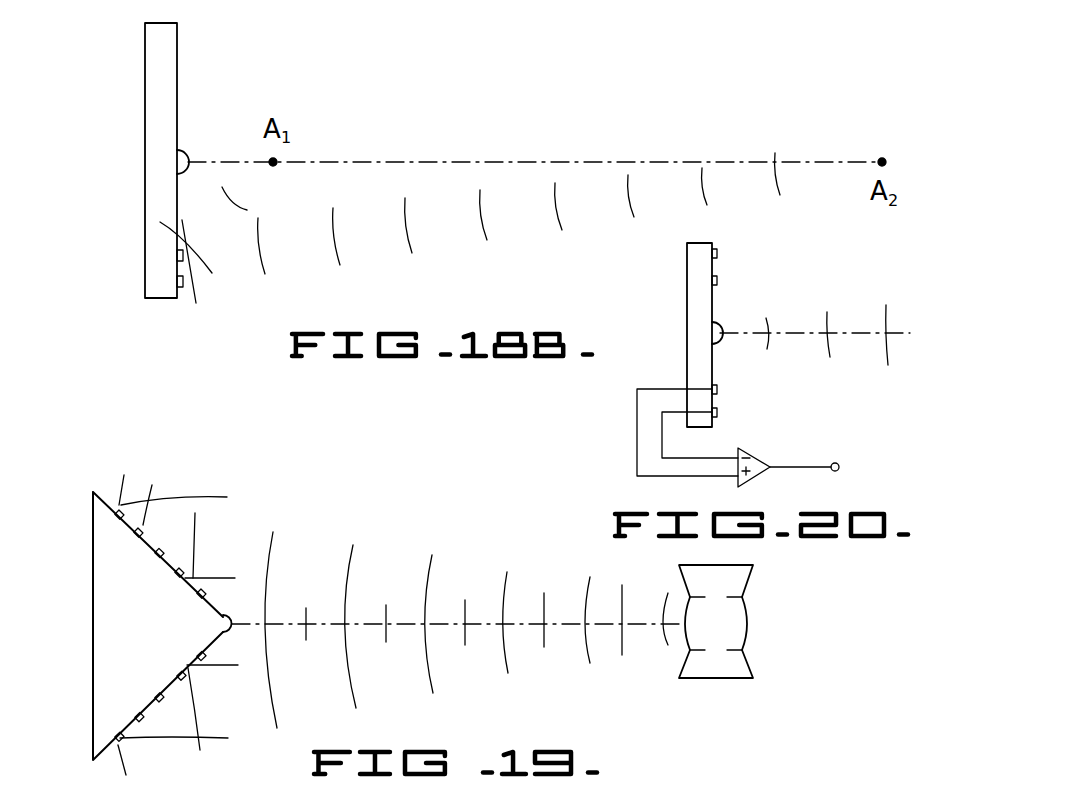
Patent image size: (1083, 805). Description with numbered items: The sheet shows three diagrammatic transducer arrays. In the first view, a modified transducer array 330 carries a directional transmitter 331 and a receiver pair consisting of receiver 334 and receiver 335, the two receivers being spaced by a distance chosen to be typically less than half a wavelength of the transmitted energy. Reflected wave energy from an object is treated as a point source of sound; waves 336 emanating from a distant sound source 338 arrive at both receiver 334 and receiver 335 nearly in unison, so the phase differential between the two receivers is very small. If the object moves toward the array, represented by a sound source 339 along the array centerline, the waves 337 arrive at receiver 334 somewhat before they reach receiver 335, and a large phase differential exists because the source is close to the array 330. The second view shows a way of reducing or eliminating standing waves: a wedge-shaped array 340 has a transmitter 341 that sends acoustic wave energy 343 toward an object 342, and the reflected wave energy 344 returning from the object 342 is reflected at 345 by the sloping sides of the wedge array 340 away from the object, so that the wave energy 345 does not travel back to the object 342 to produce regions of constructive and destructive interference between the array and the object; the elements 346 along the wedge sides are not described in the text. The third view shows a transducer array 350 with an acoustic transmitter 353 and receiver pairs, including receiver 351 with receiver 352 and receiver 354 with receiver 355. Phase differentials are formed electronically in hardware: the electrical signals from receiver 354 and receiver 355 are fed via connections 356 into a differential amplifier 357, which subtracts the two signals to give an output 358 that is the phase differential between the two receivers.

In FIG. 18B, the transducer array 330 is at (145, 56).
In FIG. 18B, the directional transmitter 331 is at (182, 152).
In FIG. 18B, the receiver 334 is at (176, 257).
In FIG. 18B, the receiver 335 is at (176, 280).
In FIG. 18B, the waves 336 is at (196, 303).
In FIG. 18B, the waves 337 is at (210, 277).
In FIG. 18B, the sound source 338 is at (882, 162).
In FIG. 18B, the sound source 339 is at (273, 162).
In FIG. 19, the wedge-shaped array 340 is at (93, 579).
In FIG. 19, the transmitter 341 is at (228, 620).
In FIG. 19, the object 342 is at (683, 675).
In FIG. 19, the acoustic wave energy 343 is at (386, 605).
In FIG. 19, the reflected wave energy 344 is at (272, 535).
In FIG. 19, the reflected wave energy 345 is at (158, 742).
In FIG. 19, the transducer elements 346 is at (122, 508).
In FIG. 20, the transducer array 350 is at (687, 272).
In FIG. 20, the receiver 351 is at (717, 254).
In FIG. 20, the receiver 352 is at (717, 281).
In FIG. 20, the acoustic transmitter 353 is at (718, 330).
In FIG. 20, the receiver 354 is at (717, 389).
In FIG. 20, the receiver 355 is at (717, 413).
In FIG. 20, the connections 356 is at (660, 421).
In FIG. 20, the differential amplifier 357 is at (758, 458).
In FIG. 20, the output 358 is at (840, 463).